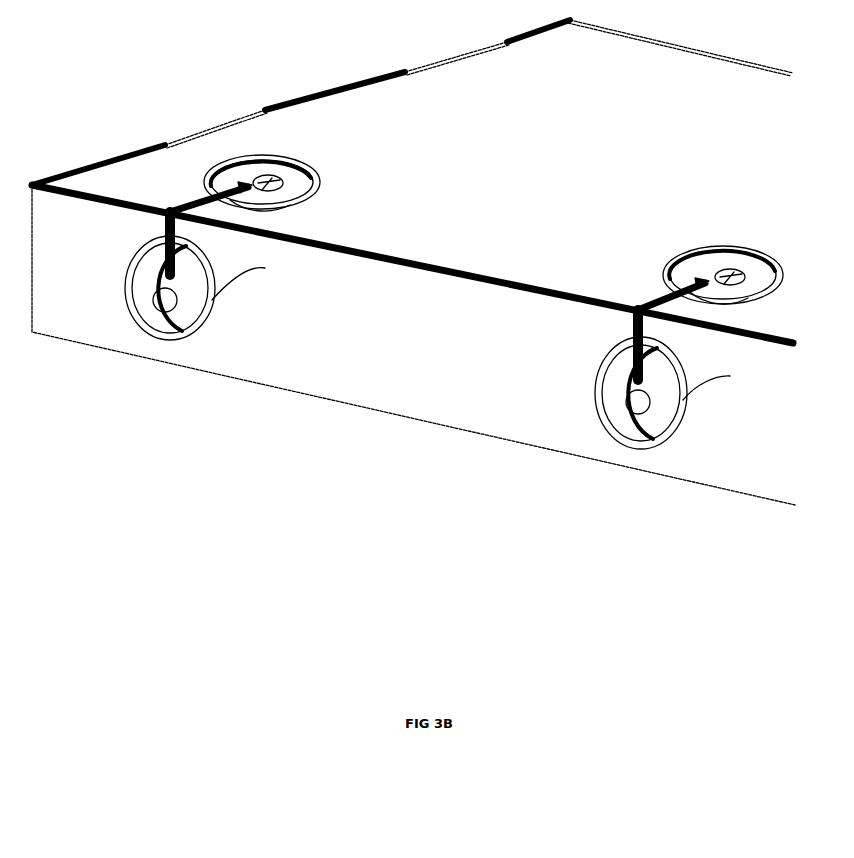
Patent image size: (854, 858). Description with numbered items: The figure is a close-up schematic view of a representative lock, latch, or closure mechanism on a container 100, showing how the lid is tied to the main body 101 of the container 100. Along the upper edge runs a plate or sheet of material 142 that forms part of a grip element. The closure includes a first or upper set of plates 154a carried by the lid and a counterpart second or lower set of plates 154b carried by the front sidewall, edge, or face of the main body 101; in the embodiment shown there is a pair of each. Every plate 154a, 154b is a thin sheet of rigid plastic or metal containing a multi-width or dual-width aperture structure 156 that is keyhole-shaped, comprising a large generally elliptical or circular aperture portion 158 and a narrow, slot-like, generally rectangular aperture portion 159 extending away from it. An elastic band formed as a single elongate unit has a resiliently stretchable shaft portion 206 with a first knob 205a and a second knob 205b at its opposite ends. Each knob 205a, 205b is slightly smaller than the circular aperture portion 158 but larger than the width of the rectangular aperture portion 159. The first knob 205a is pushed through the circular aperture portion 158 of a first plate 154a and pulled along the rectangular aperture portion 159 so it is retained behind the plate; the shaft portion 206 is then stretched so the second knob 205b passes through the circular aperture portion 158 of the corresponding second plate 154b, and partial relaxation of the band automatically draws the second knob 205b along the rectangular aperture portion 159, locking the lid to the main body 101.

The container 100 is at (75, 380).
The main body 101 is at (422, 402).
The plate or sheet of material 142 is at (218, 128).
The first or upper set of plates 154a is at (320, 180).
The second or lower set of plates 154b is at (193, 337).
The multi-width or dual-width aperture structure 156 is at (249, 171).
The generally elliptical/circular aperture portion 158 is at (275, 178).
The generally rectangular aperture portion 159 is at (212, 184).
The first knob 205a is at (285, 204).
The second knob 205b is at (182, 262).
The shaft portion 206 is at (157, 223).